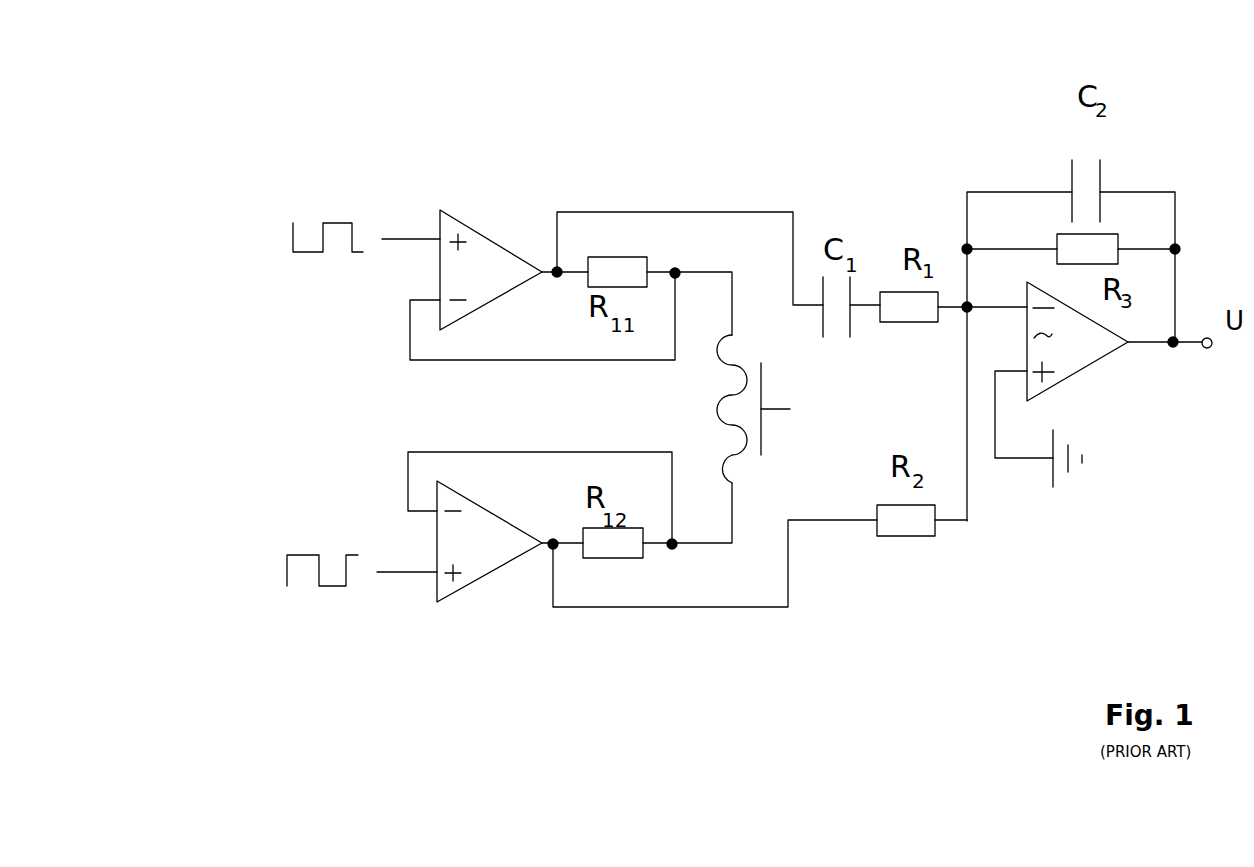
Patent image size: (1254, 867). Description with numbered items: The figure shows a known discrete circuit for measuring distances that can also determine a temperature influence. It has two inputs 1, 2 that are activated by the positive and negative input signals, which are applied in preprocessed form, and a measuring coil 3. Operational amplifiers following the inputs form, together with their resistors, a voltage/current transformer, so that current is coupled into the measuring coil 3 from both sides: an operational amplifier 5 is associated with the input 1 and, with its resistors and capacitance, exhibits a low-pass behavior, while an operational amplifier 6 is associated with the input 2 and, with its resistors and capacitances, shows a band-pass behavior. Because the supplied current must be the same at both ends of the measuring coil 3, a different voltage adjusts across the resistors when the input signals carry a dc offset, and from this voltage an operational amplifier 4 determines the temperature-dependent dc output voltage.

The input 1 is at (400, 573).
The input 2 is at (402, 237).
The measuring coil 3 is at (792, 402).
The operational amplifier 4 is at (1085, 369).
The operational amplifier 5 is at (480, 578).
The operational amplifier 6 is at (492, 238).